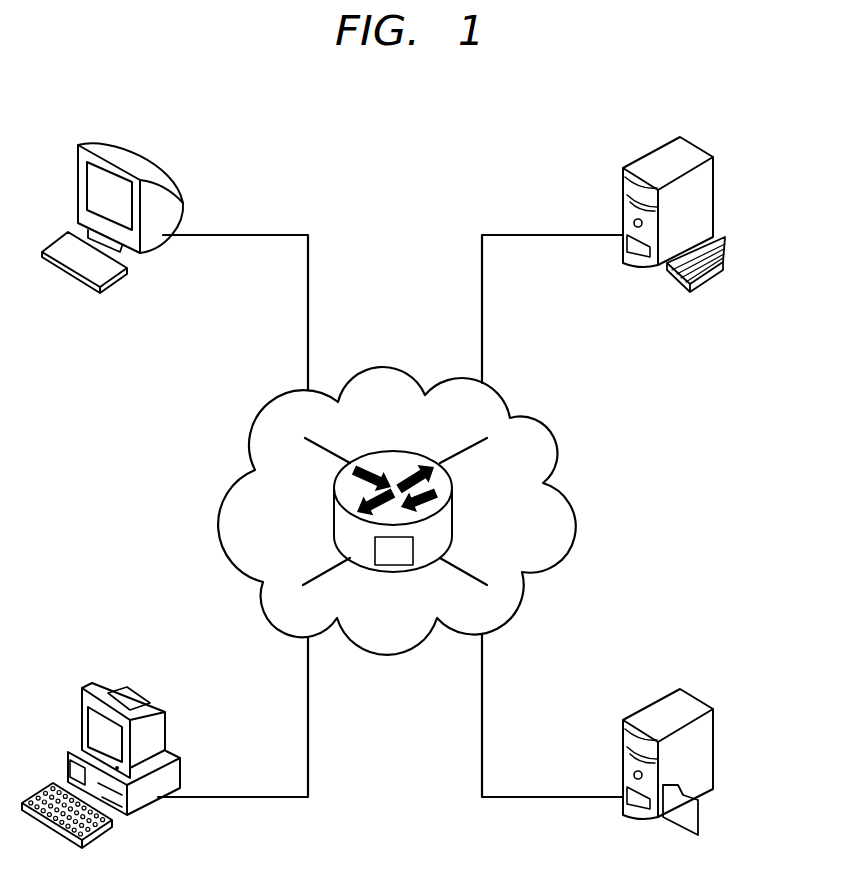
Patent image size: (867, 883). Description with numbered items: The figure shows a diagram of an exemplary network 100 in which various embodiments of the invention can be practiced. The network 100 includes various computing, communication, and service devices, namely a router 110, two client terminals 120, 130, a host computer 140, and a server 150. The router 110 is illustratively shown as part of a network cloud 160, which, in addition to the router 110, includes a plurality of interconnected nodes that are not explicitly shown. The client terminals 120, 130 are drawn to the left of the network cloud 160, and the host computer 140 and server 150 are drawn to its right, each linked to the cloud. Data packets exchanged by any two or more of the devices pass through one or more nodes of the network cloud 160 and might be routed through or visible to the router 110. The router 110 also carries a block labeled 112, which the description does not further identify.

The network 100 is at (419, 100).
The router 110 is at (335, 507).
The traffic manager module 112 is at (395, 567).
The client terminal 120 is at (150, 158).
The client terminal 130 is at (148, 700).
The host computer 140 is at (705, 148).
The server 150 is at (705, 693).
The network cloud 160 is at (553, 447).